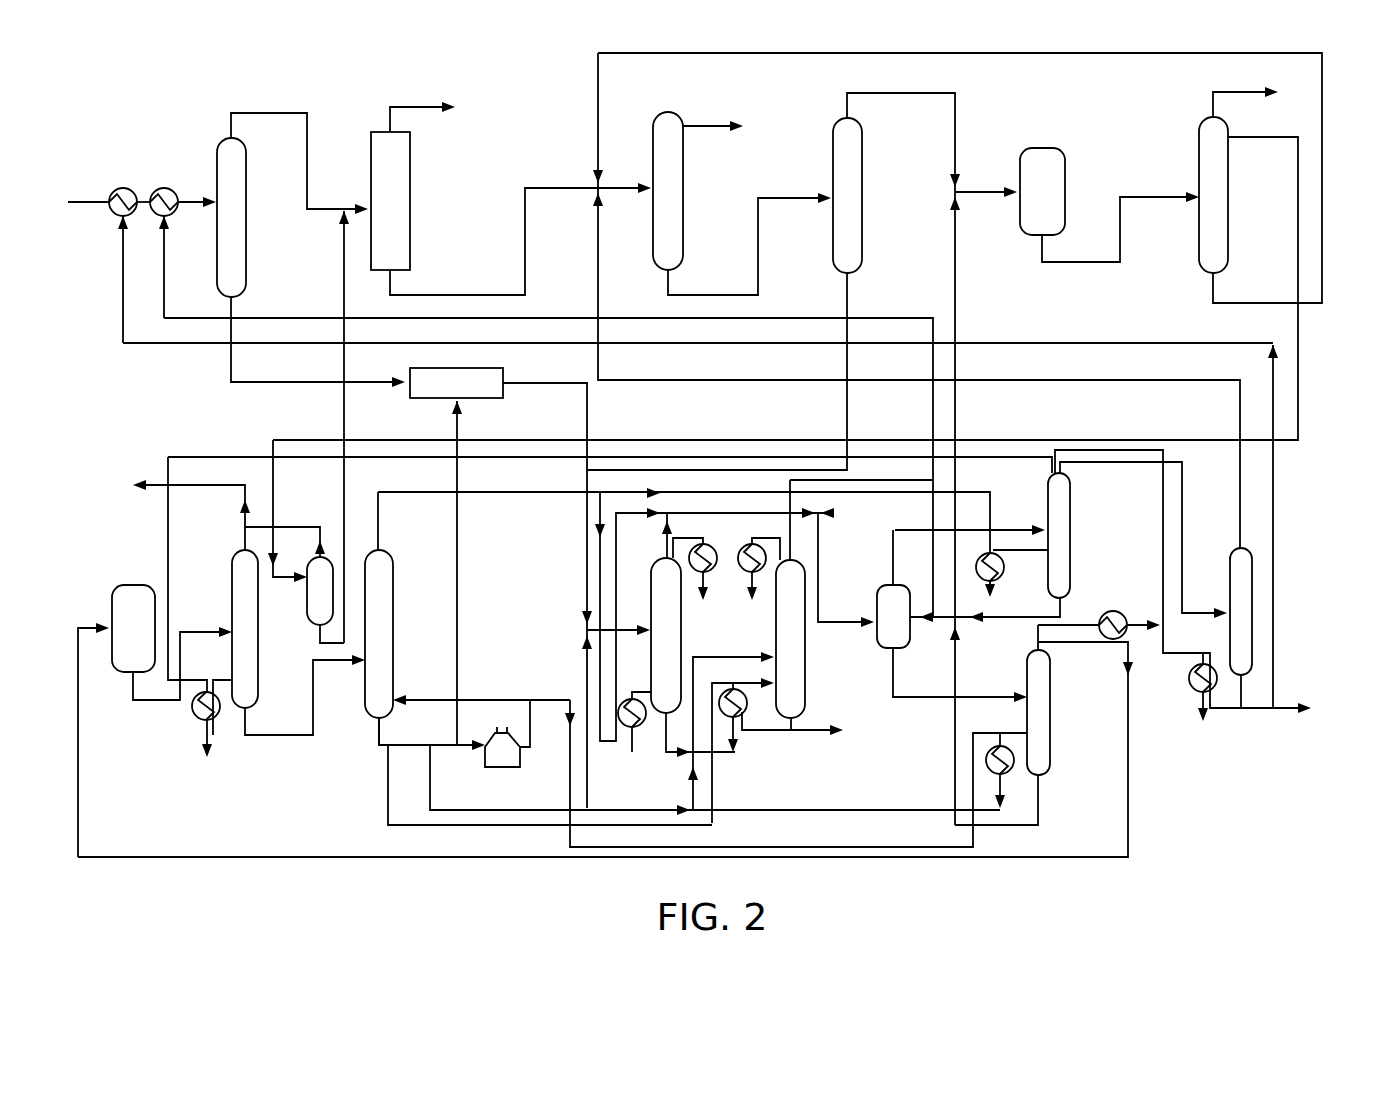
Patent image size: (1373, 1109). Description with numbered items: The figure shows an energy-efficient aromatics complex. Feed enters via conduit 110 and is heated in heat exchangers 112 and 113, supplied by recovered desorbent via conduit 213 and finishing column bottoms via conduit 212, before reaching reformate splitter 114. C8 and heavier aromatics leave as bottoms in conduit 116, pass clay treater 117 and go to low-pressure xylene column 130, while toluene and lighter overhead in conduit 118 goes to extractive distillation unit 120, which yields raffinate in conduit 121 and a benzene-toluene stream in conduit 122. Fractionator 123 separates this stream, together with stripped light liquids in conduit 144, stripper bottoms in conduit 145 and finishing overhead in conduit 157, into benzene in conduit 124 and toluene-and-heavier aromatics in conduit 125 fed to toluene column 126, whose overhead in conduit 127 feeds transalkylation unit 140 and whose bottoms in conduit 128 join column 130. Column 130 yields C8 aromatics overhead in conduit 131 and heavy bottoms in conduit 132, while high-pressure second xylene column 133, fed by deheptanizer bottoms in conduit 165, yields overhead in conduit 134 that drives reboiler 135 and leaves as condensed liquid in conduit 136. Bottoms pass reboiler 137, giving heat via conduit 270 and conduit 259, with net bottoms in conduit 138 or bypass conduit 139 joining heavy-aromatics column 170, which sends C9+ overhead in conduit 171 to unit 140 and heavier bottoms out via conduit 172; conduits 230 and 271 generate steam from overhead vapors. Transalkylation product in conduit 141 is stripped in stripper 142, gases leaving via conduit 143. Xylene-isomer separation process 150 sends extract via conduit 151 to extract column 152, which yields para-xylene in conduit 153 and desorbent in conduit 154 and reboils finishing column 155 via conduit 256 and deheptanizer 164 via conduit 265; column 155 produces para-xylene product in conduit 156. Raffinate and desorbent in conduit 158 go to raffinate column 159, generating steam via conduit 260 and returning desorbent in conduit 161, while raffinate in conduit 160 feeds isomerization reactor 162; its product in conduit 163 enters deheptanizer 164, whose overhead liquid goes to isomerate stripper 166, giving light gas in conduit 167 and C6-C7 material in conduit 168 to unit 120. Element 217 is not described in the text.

The feed conduit 110 is at (86, 200).
The heat exchanger 112 is at (123, 188).
The heat exchanger 113 is at (163, 187).
The reformate splitter 114 is at (247, 232).
The bottoms conduit 116 is at (244, 384).
The clay treater 117 is at (503, 385).
The overhead conduit 118 is at (270, 110).
The extractive distillation process unit 120 is at (412, 190).
The raffinate conduit 121 is at (418, 105).
The aromatics stream conduit 122 is at (465, 293).
The fractionator 123 is at (685, 168).
The benzene stream conduit 124 is at (703, 124).
The toluene-and-heavier aromatics conduit 125 is at (715, 293).
The toluene column 126 is at (865, 182).
The toluene overhead conduit 127 is at (902, 97).
The toluene column bottoms conduit 128 is at (848, 297).
The low-pressure xylene column 130 is at (683, 625).
The overhead conduit 131 is at (663, 522).
The bottoms conduit 132 is at (684, 760).
The high-pressure second xylene column 133 is at (365, 718).
The overhead conduit 134 is at (492, 495).
The reboiler 135 is at (625, 735).
The condensed liquid conduit 136 is at (612, 603).
The reboiler 137 is at (495, 768).
The net bottoms conduit 138 is at (587, 787).
The bottoms bypass conduit 139 is at (613, 812).
The transalkylation unit 140 is at (1043, 148).
The transalkylation product conduit 141 is at (1120, 230).
The stripper 142 is at (1228, 218).
The gas conduit 143 is at (1237, 90).
The light liquids conduit 144 is at (1298, 328).
The stripper bottoms conduit 145 is at (773, 55).
The xylene-isomer separation process 150 is at (880, 605).
The extract conduit 151 is at (895, 548).
The extract column 152 is at (1070, 530).
The para-xylene conduit 153 is at (1182, 502).
The returned desorbent conduit 154 is at (985, 617).
The finishing column 155 is at (1253, 613).
The para-xylene product conduit 156 is at (1290, 708).
The finishing column overhead conduit 157 is at (597, 252).
The raffinate mixture conduit 158 is at (983, 697).
The raffinate column 159 is at (1050, 710).
The raffinate conduit 160 is at (78, 793).
The returned desorbent conduit 161 is at (955, 777).
The isomerization reactor 162 is at (112, 595).
The isomerization product conduit 163 is at (165, 703).
The deheptanizer 164 is at (230, 572).
The deheptanizer bottoms conduit 165 is at (285, 737).
The isomerate stripper 166 is at (305, 600).
The light materials conduit 167 is at (209, 487).
The C6-C7 conduit 168 is at (344, 278).
The heavy-aromatics column 170 is at (805, 658).
The heavies overhead conduit 171 is at (955, 265).
The heavies bottoms conduit 172 is at (813, 730).
The heating conduit 212 is at (123, 278).
The heating conduit 213 is at (165, 253).
The hydrotreater column 217 is at (393, 637).
The steam generation conduit 230 is at (692, 538).
The reboiling conduit 256 is at (1167, 655).
The heated bottoms conduit 259 is at (540, 700).
The steam generation conduit 260 is at (1077, 623).
The reboiling conduit 265 is at (168, 547).
The bottoms conduit 270 is at (714, 790).
The steam generation conduit 271 is at (758, 538).